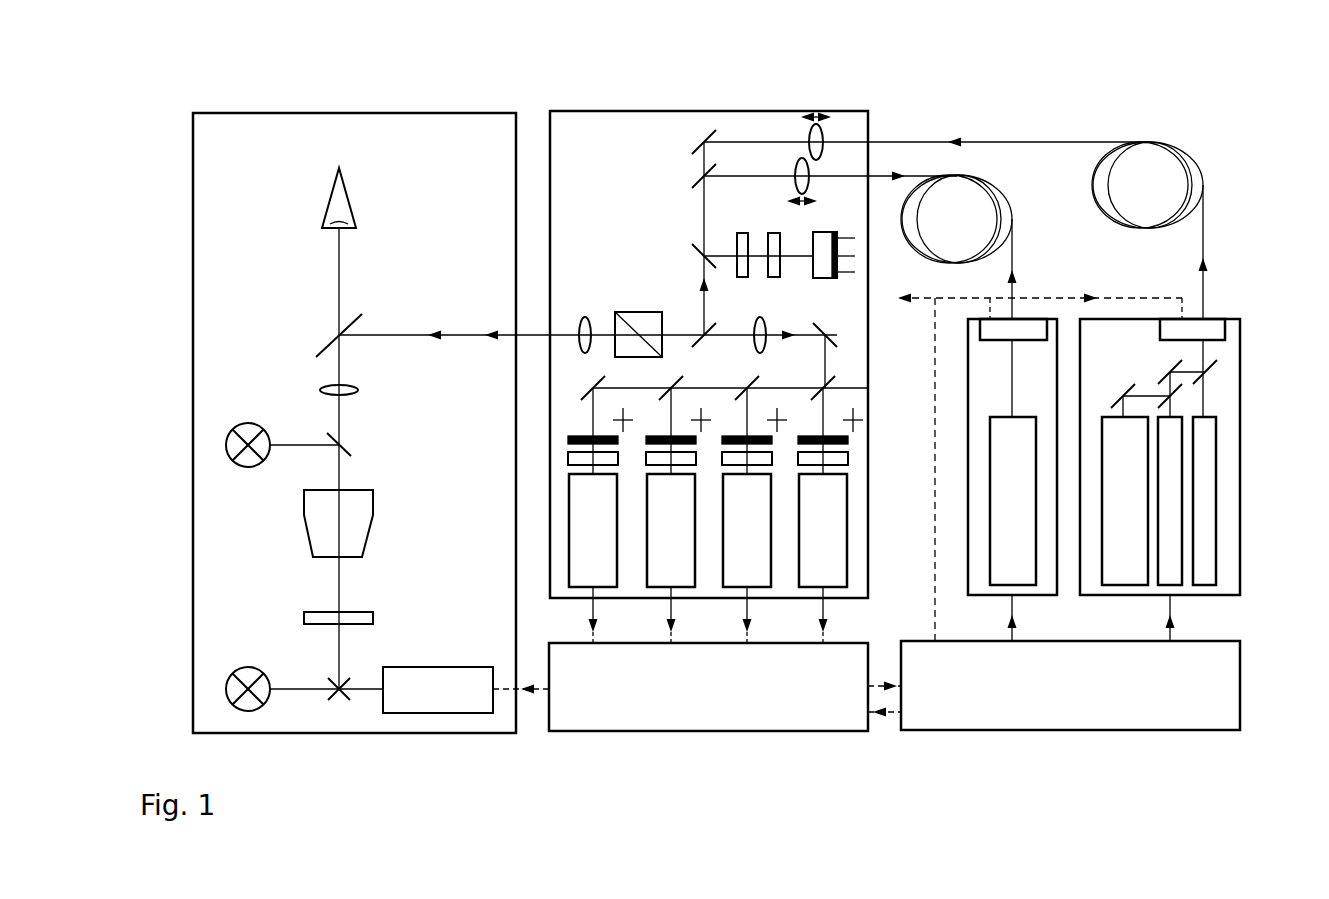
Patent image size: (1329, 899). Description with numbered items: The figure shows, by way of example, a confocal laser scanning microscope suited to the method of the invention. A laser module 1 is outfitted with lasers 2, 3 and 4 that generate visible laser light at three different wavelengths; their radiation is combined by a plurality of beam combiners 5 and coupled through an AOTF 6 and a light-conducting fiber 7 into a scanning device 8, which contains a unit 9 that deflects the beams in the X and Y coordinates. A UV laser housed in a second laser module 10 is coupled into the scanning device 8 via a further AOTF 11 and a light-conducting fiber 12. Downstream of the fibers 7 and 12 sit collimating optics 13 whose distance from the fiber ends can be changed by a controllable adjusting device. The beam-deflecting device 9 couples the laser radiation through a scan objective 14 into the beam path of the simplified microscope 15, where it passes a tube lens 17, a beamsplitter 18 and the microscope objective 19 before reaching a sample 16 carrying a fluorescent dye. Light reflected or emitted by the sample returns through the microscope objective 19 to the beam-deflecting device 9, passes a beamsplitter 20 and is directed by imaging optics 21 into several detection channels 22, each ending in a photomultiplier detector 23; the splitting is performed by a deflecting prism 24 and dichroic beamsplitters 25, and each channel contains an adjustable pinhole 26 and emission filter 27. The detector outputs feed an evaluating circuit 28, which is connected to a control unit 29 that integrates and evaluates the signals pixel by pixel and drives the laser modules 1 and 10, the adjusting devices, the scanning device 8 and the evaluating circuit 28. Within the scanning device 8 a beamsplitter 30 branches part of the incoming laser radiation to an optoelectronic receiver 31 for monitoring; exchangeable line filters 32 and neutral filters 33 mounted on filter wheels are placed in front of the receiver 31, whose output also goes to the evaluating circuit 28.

The laser module 1 is at (1243, 573).
The laser 2 is at (1205, 538).
The laser 3 is at (1168, 492).
The laser 4 is at (1133, 568).
The beam combiners 5 is at (1163, 372).
The AOTF 6 is at (1215, 330).
The light-conducting fiber 7 is at (1057, 141).
The scanning device 8 is at (627, 111).
The beam-deflecting unit 9 is at (638, 315).
The second laser module 10 is at (990, 593).
The AOTF 11 is at (1000, 340).
The light-conducting fiber 12 is at (1013, 206).
The collimating optics 13 is at (797, 168).
The scan objective 14 is at (585, 316).
The microscope 15 is at (345, 112).
The sample 16 is at (373, 614).
The tube lens 17 is at (358, 394).
The beamsplitter 18 is at (352, 455).
The microscope objective 19 is at (362, 523).
The beamsplitter 20 is at (703, 345).
The imaging optics 21 is at (766, 343).
The detection channels 22 is at (598, 412).
The detectors 23 is at (708, 515).
The deflecting prism 24 is at (840, 333).
The dichroic beamsplitters 25 is at (868, 388).
The pinholes 26 is at (848, 440).
The emission filters 27 is at (848, 462).
The evaluating circuit 28 is at (725, 687).
The control unit 29 is at (1070, 514).
The beamsplitter 30 is at (698, 250).
The optoelectronic receiver 31 is at (828, 280).
The line filters 32 is at (742, 232).
The neutral filters 33 is at (775, 278).